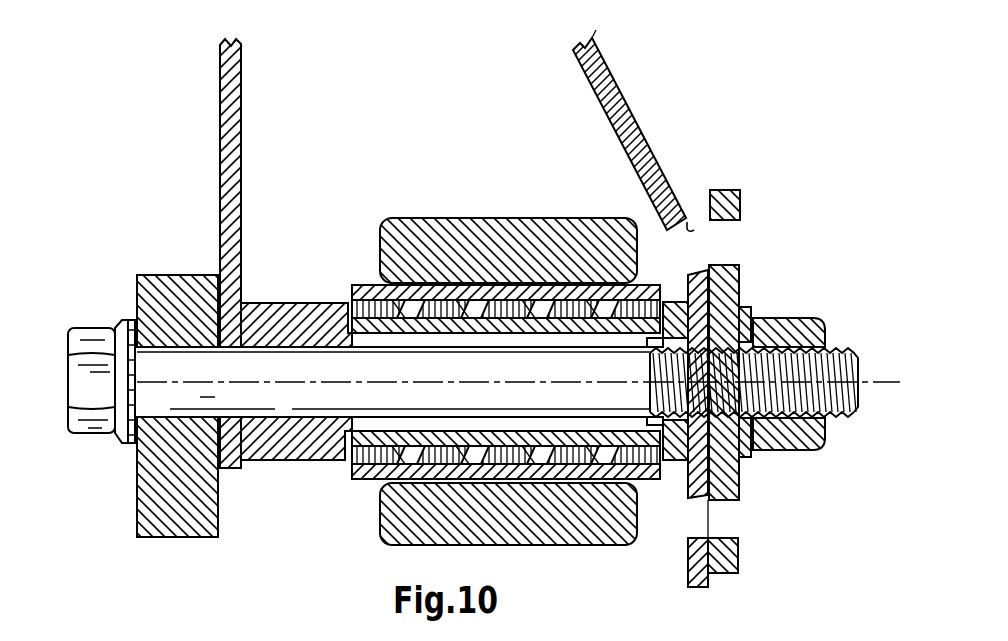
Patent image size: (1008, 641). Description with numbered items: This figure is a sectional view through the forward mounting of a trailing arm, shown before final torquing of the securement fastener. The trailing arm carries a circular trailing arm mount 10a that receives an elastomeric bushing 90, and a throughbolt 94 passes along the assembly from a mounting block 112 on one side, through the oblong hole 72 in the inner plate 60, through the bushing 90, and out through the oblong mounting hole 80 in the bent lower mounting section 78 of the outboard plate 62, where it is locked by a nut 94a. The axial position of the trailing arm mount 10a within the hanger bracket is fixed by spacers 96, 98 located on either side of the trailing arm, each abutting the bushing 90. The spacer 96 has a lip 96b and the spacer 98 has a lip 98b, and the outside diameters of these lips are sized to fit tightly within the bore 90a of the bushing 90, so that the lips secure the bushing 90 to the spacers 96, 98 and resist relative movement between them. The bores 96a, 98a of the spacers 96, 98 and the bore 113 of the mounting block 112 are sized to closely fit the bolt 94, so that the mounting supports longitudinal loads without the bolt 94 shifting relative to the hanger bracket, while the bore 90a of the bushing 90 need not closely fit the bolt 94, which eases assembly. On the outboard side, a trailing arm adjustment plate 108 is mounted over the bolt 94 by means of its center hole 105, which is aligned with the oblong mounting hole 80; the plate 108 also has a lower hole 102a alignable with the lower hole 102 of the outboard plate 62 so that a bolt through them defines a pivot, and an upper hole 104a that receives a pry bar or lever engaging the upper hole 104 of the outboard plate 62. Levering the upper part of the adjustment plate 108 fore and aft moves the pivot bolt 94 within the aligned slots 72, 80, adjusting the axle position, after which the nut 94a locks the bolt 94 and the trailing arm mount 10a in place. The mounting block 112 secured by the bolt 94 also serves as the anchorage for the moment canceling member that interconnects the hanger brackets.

The trailing arm mount 10a is at (468, 218).
The inner plate 60 is at (210, 85).
The outboard plate 62 is at (667, 110).
The oblong hole 72 is at (247, 347).
The mounting section 78 is at (700, 497).
The oblong mounting hole 80 is at (718, 358).
The elastomeric bushing 90 is at (358, 285).
The bushing bore 90a is at (427, 333).
The throughbolt 94 is at (82, 378).
The nut 94a is at (825, 437).
The spacer 96 is at (290, 453).
The spacer bore 96a is at (307, 347).
The lip 96b is at (357, 463).
The spacer 98 is at (677, 460).
The spacer bore 98a is at (647, 350).
The lip 98b is at (650, 416).
The lower hole 102 is at (690, 537).
The lower hole 102a is at (728, 536).
The upper hole 104 is at (692, 222).
The upper hole 104a is at (731, 220).
The center hole 105 is at (750, 358).
The trailing arm adjustment plate 108 is at (725, 487).
The mounting block 112 is at (137, 477).
The mounting block bore 113 is at (183, 347).